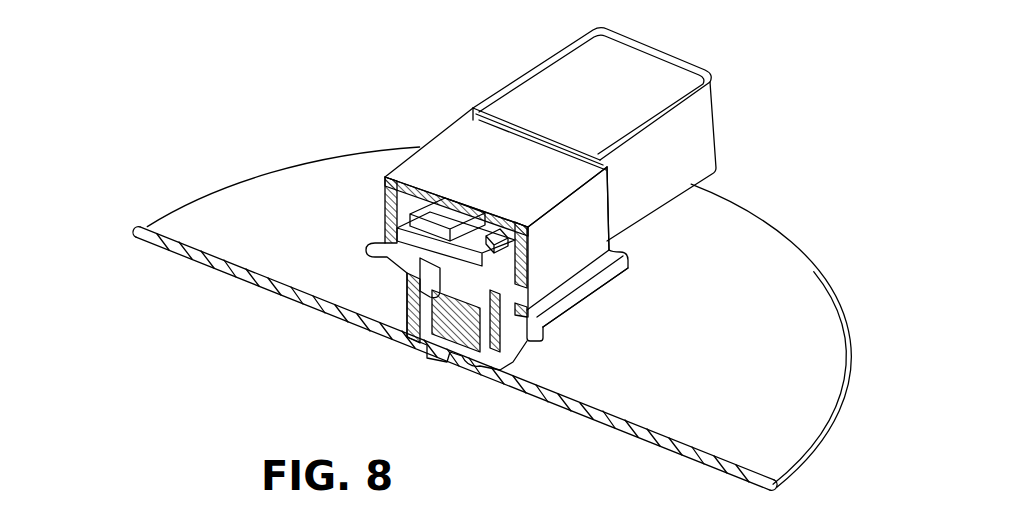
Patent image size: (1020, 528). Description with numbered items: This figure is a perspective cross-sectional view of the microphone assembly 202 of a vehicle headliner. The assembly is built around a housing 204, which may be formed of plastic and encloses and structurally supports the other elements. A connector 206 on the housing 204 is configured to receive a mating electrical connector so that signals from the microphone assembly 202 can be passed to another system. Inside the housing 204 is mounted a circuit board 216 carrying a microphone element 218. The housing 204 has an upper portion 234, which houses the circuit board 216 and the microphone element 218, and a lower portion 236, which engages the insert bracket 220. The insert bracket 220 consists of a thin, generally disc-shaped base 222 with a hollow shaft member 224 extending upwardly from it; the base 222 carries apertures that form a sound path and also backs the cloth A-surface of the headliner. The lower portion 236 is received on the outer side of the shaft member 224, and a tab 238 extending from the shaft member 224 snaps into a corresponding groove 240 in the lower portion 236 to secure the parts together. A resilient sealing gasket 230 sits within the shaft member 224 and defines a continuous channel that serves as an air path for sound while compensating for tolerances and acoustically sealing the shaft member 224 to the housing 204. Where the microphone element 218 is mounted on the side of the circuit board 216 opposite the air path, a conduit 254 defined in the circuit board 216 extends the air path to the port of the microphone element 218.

The microphone assembly 202 is at (229, 71).
The housing 204 is at (434, 146).
The connector 206 is at (657, 70).
The circuit board 216 is at (481, 250).
The microphone element 218 is at (455, 240).
The insert bracket 220 is at (198, 176).
The base 222 is at (747, 348).
The shaft member 224 is at (497, 372).
The sealing gasket 230 is at (434, 324).
The upper portion 234 is at (563, 240).
The lower portion 236 is at (510, 350).
The tab 238 is at (482, 364).
The groove 240 is at (413, 303).
The conduit 254 is at (455, 248).